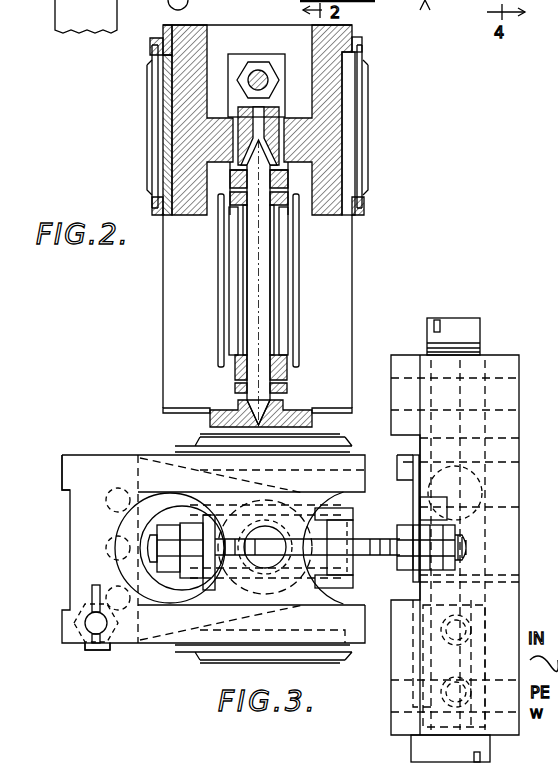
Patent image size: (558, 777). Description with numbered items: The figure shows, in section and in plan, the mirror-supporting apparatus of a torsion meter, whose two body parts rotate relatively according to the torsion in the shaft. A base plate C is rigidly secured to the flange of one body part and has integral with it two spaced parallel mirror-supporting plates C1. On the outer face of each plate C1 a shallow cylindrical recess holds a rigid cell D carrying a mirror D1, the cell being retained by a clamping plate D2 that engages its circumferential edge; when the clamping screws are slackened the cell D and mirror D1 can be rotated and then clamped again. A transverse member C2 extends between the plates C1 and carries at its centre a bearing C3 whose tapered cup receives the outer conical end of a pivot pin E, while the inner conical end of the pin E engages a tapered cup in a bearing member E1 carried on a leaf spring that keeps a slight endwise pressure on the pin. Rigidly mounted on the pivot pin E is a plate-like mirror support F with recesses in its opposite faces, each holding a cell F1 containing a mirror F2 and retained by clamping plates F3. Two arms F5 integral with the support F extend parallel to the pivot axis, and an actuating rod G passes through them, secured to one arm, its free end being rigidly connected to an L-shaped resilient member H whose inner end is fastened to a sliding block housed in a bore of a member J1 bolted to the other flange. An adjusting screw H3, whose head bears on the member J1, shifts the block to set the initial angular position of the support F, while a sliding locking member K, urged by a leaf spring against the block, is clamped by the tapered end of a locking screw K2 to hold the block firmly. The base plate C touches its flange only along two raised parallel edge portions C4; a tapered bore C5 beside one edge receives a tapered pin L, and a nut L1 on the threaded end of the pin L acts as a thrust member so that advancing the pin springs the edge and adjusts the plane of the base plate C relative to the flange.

In FIG. 2, the base plate C is at (340, 338).
In FIG. 3, the base plate C is at (90, 548).
In FIG. 2, the mirror-supporting plates C1 is at (163, 27).
In FIG. 3, the mirror-supporting plates C1 is at (183, 482).
In FIG. 2, the transverse member C2 is at (281, 131).
In FIG. 3, the transverse member C2 is at (300, 500).
In FIG. 2, the bearing C3 is at (285, 115).
In FIG. 3, the raised parallel edge portions C4 is at (62, 470).
In FIG. 3, the tapered bore C5 is at (78, 612).
In FIG. 2, the cell D is at (150, 153).
In FIG. 3, the cell D is at (350, 452).
In FIG. 2, the mirror D1 is at (150, 128).
In FIG. 2, the clamping plate D2 is at (152, 48).
In FIG. 3, the clamping plate D2 is at (322, 650).
In FIG. 2, the pivot pin E is at (250, 270).
In FIG. 2, the bearing member E1 is at (210, 418).
In FIG. 2, the mirror support F is at (235, 372).
In FIG. 2, the cell F1 is at (240, 248).
In FIG. 2, the mirror F2 is at (215, 293).
In FIG. 2, the clamping plates F3 is at (222, 317).
In FIG. 3, the clamping plates F3 is at (340, 500).
In FIG. 2, the arms F5 is at (251, 62).
In FIG. 3, the arms F5 is at (183, 535).
In FIG. 2, the actuating rod G is at (260, 70).
In FIG. 3, the actuating rod G is at (400, 548).
In FIG. 3, the L-shaped resilient member H is at (413, 519).
In FIG. 3, the adjusting screw H3 is at (420, 758).
In FIG. 3, the member J1 is at (519, 368).
In FIG. 3, the locking member K is at (470, 493).
In FIG. 3, the locking screw K2 is at (466, 332).
In FIG. 3, the tapered pin L is at (96, 628).
In FIG. 3, the nut L1 is at (100, 650).